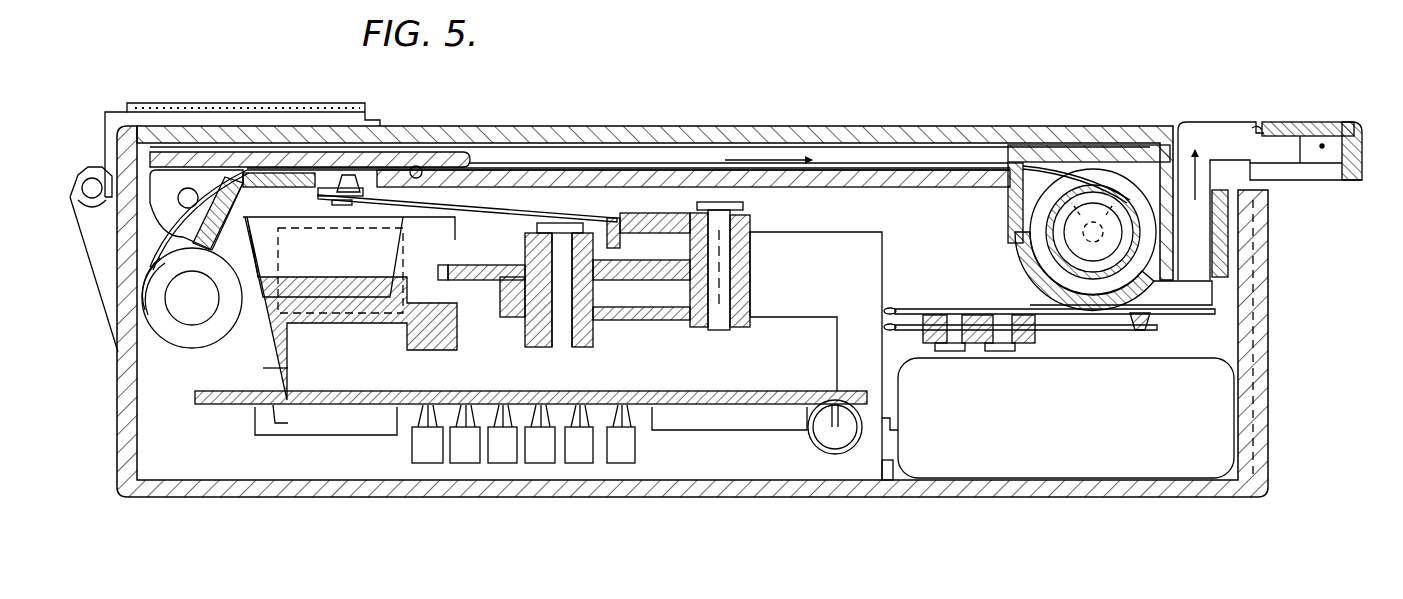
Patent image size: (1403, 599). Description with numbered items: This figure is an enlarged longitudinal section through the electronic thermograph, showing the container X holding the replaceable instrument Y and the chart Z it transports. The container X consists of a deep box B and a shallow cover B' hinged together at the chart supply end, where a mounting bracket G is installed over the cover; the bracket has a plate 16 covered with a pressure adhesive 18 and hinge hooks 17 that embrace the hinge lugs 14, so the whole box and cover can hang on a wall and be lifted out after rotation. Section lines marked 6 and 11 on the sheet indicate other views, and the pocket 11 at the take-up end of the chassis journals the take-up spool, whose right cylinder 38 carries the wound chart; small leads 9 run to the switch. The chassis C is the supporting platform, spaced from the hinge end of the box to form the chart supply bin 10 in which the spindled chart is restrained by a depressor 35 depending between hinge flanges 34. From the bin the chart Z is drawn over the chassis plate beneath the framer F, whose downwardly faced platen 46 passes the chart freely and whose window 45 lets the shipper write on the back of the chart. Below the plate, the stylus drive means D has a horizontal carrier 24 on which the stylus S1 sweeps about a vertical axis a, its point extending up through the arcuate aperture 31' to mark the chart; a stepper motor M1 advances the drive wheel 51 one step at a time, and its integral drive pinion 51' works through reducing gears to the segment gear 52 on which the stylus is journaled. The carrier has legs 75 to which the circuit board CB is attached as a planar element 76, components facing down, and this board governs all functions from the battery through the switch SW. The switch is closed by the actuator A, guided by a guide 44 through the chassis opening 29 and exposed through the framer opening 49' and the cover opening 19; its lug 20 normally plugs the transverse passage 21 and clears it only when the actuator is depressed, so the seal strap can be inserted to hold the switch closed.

The container X is at (640, 500).
The mounting bracket G is at (115, 112).
The pressure adhesive 18 is at (280, 112).
The hinge lug 14 is at (90, 182).
The hinge hooks 17 is at (92, 202).
The section line 6 is at (50, 200).
The pocket 11 is at (104, 253).
The plate 16 is at (243, 120).
The platen 46 is at (420, 166).
The window 45 is at (490, 170).
The chart Z is at (645, 160).
The framer F is at (793, 140).
The chassis C is at (877, 163).
The instrument Y is at (940, 145).
The cover B' is at (1089, 121).
The hinge flanges 34 is at (178, 182).
The depressor 35 is at (220, 178).
The arcuate aperture 31' is at (279, 196).
The stylus S1 is at (350, 178).
The chart supply bin 10 is at (192, 312).
The stepper motor M1 is at (418, 252).
The stylus drive means D is at (512, 292).
The drive wheel 51 is at (480, 284).
The drive pinion 51' is at (484, 262).
The segment gear 52 is at (612, 240).
The carrier 24 is at (628, 322).
The axis a is at (742, 295).
The legs 75 is at (288, 382).
The planar element 76 is at (590, 392).
The circuit board CB is at (380, 445).
The box B is at (1066, 447).
The switch SW is at (1133, 330).
The wire leads 9 is at (884, 311).
The right cylinder 38 is at (1040, 218).
The actuator A is at (1222, 120).
The opening 49' is at (1180, 114).
The opening 19 is at (1256, 130).
The lug 20 is at (1285, 140).
The transverse passage 21 is at (1323, 145).
The opening 29 is at (1178, 213).
The guide 44 is at (1222, 256).